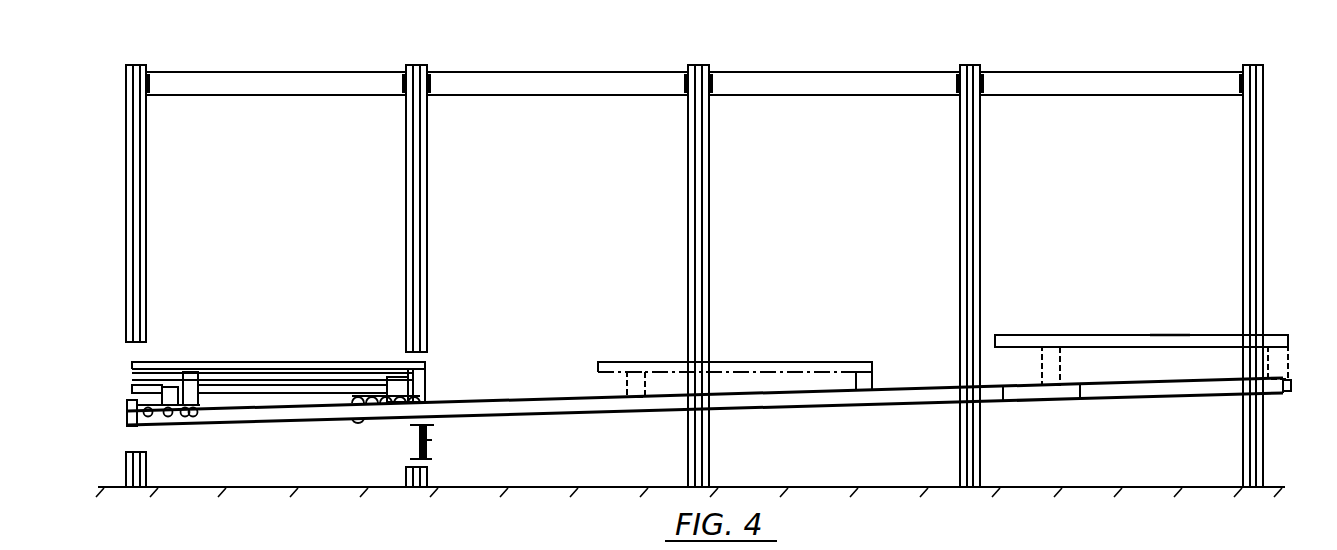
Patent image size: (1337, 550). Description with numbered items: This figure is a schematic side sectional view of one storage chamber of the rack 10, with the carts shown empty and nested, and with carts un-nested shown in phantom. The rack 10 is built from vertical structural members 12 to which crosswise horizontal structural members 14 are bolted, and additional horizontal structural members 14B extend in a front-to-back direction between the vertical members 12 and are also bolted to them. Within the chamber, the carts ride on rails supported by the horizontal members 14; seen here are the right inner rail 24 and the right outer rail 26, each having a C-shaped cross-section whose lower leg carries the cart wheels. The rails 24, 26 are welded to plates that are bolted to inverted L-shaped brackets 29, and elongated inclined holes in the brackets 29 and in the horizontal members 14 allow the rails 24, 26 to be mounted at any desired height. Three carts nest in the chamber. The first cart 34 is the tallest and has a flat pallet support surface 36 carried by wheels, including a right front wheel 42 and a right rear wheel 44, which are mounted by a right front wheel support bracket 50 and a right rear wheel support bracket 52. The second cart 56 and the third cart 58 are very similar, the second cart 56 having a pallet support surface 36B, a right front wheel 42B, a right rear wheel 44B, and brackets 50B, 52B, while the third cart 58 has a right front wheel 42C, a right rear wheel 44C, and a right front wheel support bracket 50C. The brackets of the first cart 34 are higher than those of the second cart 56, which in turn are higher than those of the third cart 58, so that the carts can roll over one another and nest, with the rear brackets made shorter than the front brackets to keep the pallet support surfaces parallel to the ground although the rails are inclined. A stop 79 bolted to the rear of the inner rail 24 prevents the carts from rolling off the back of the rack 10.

The rack 10 is at (108, 121).
The vertical structural member 12 is at (148, 125).
The crosswise horizontal structural member 14 is at (127, 418).
The horizontal structural member 14B is at (392, 71).
The right inner rail 24 is at (1140, 390).
The right outer rail 26 is at (1010, 396).
The bracket 29 is at (432, 440).
The first cart 34 is at (352, 362).
The pallet support surface 36 is at (245, 370).
The pallet support surface 36B is at (760, 372).
The right front wheel 42 is at (205, 418).
The right front wheel 42B is at (185, 420).
The right front wheel 42C is at (166, 420).
The right rear wheel 44 is at (436, 418).
The right rear wheel 44B is at (382, 420).
The right rear wheel 44C is at (372, 416).
The right front wheel support bracket 50 is at (195, 372).
The right front wheel support bracket 50B is at (140, 385).
The right front wheel support bracket 50C is at (162, 399).
The right rear wheel support bracket 52 is at (425, 378).
The right rear wheel support bracket 52B is at (425, 392).
The second cart 56 is at (275, 380).
The third cart 58 is at (300, 388).
The stop 79 is at (1291, 386).